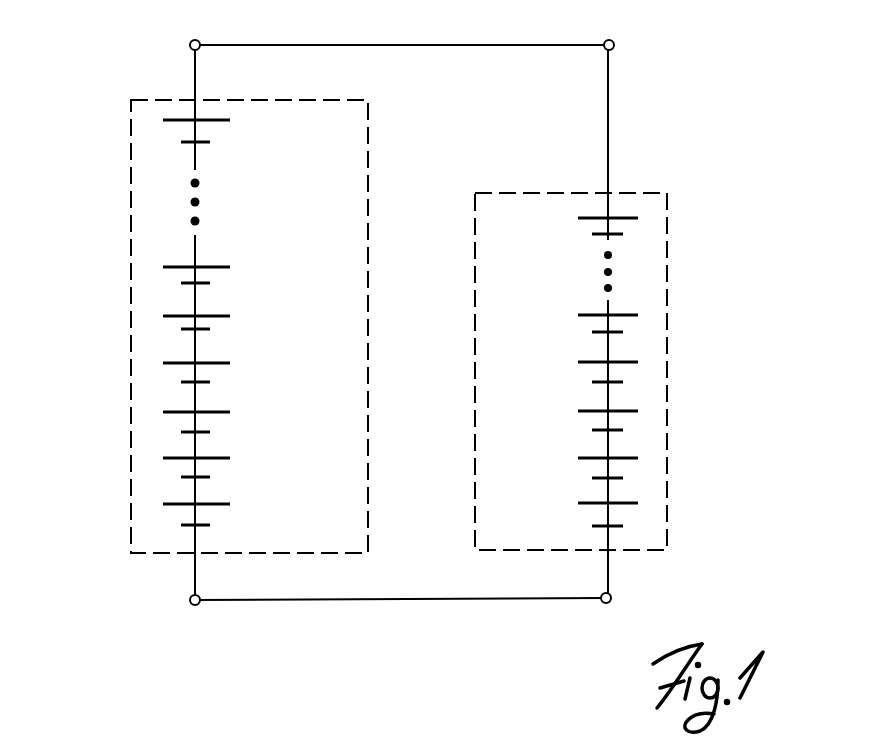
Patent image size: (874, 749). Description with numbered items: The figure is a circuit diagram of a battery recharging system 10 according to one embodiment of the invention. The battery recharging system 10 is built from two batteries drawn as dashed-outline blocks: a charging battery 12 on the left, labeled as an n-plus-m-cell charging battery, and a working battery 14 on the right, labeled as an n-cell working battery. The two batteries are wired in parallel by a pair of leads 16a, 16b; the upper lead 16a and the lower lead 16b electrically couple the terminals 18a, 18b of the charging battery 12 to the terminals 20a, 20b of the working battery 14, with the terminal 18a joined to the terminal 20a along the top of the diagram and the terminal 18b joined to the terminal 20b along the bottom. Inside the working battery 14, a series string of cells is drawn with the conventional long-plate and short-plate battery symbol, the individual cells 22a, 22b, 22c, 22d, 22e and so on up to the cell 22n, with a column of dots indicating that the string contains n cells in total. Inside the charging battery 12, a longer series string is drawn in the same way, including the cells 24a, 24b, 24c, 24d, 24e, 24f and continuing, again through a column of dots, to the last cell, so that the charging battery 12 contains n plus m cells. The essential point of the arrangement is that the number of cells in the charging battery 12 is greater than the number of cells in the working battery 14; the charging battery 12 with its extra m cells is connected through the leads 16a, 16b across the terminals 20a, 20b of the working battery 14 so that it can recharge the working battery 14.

The battery recharging system 10 is at (95, 92).
The charging battery 12 is at (131, 205).
The working battery 14 is at (667, 248).
The lead 16a is at (465, 45).
The lead 16b is at (418, 601).
The terminal of charging battery 18a is at (189, 45).
The terminal of charging battery 18b is at (190, 600).
The terminal of working battery 20a is at (614, 45).
The terminal of working battery 20b is at (611, 598).
The cell of working battery 22a is at (625, 517).
The cell of working battery 22b is at (625, 470).
The cell of working battery 22c is at (630, 422).
The cell of working battery 22d is at (622, 375).
The cell of working battery 22e is at (630, 324).
The cell of working battery 22n is at (633, 228).
The cell of charging battery 24a is at (170, 520).
The cell of charging battery 24b is at (170, 472).
The cell of charging battery 24c is at (170, 422).
The cell of charging battery 24d is at (170, 372).
The cell of charging battery 24e is at (170, 318).
The cell of charging battery 24f is at (170, 268).